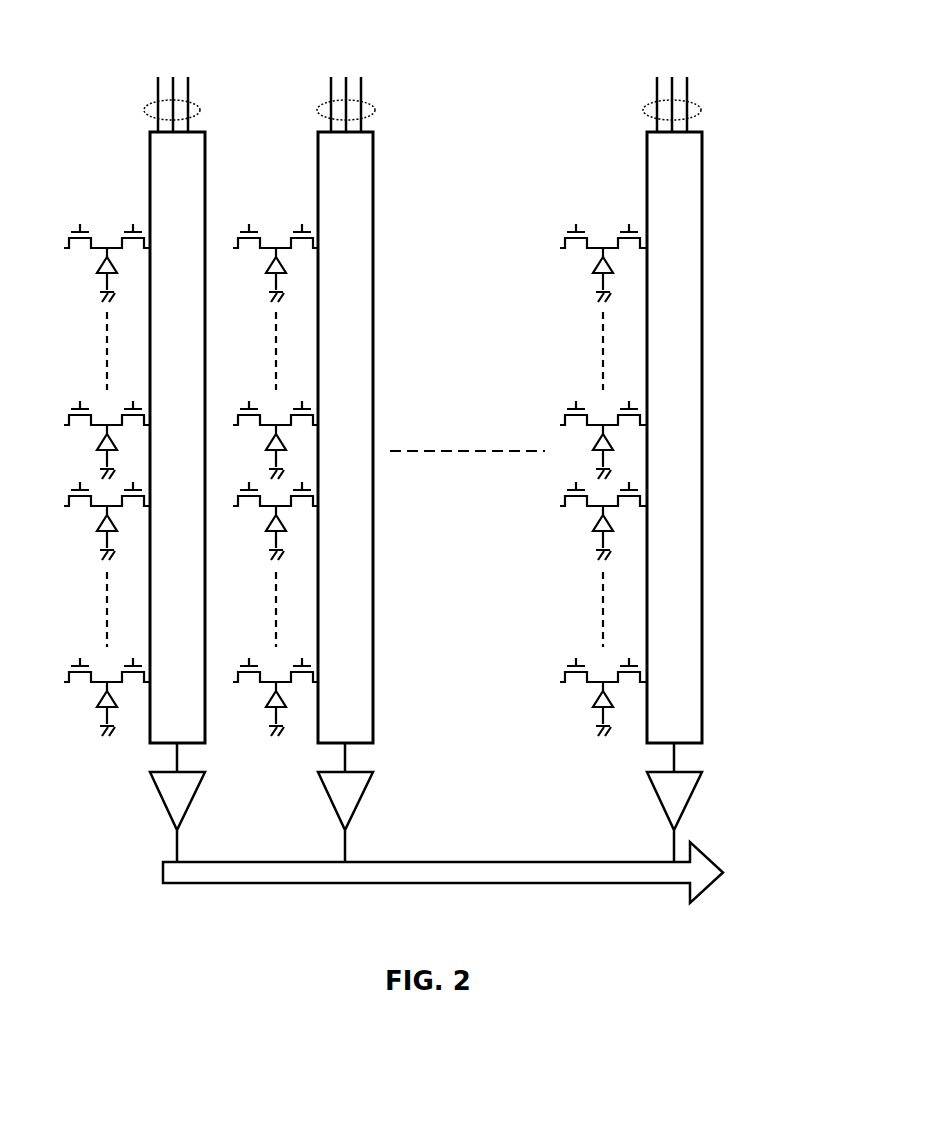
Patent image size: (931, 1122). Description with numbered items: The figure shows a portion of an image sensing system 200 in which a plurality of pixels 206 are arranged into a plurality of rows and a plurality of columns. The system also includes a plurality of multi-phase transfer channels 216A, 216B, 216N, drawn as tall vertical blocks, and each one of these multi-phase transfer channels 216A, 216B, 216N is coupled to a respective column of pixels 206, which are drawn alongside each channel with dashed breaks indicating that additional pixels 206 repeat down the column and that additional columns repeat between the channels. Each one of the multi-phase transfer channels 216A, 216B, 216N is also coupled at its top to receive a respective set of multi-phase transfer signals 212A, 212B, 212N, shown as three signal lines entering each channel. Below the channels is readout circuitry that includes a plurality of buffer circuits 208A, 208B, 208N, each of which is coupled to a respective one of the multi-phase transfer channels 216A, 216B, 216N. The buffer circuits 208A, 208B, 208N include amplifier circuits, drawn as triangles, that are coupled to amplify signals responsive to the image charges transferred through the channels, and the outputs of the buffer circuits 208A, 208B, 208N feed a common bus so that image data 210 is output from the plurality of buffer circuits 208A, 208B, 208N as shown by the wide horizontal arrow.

The image sensing system 200 is at (434, 451).
The pixels 206 is at (90, 218).
The buffer circuit 208A is at (153, 790).
The buffer circuit 208B is at (326, 790).
The buffer circuit 208N is at (658, 790).
The image data 210 is at (780, 838).
The set of multi-phase transfer signals 212A is at (143, 110).
The set of multi-phase transfer signals 212B is at (375, 111).
The set of multi-phase transfer signals 212N is at (703, 111).
The multi-phase transfer channel 216A is at (205, 226).
The multi-phase transfer channel 216B is at (373, 226).
The multi-phase transfer channel 216N is at (702, 228).